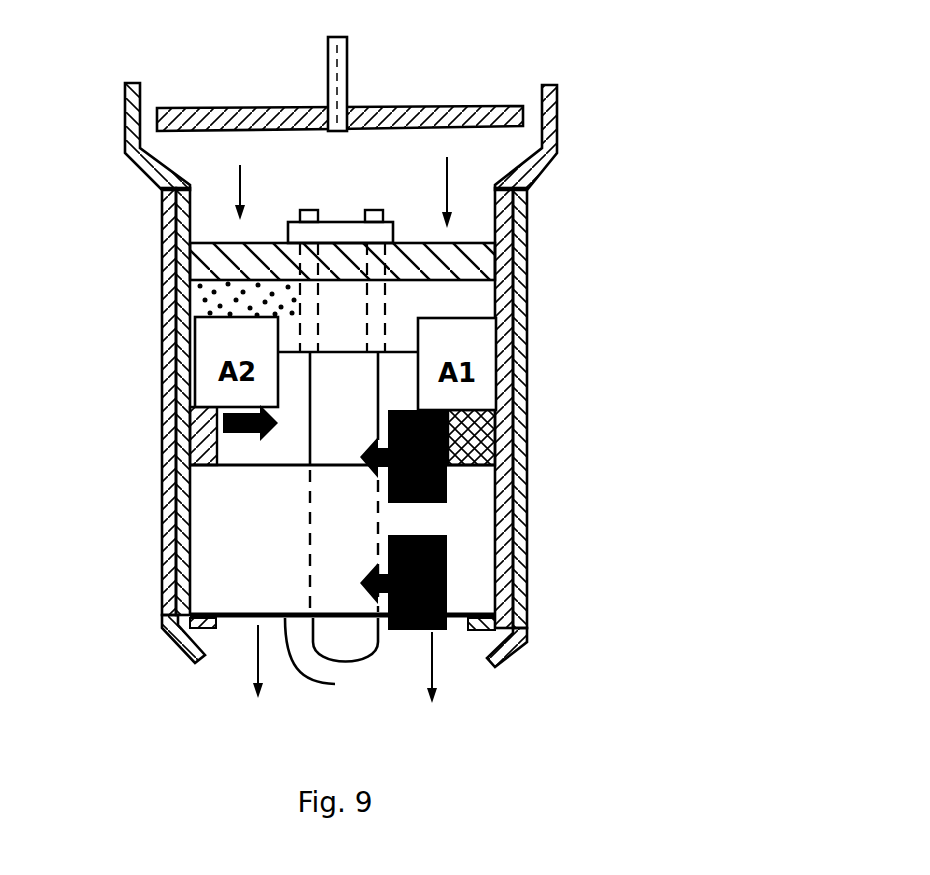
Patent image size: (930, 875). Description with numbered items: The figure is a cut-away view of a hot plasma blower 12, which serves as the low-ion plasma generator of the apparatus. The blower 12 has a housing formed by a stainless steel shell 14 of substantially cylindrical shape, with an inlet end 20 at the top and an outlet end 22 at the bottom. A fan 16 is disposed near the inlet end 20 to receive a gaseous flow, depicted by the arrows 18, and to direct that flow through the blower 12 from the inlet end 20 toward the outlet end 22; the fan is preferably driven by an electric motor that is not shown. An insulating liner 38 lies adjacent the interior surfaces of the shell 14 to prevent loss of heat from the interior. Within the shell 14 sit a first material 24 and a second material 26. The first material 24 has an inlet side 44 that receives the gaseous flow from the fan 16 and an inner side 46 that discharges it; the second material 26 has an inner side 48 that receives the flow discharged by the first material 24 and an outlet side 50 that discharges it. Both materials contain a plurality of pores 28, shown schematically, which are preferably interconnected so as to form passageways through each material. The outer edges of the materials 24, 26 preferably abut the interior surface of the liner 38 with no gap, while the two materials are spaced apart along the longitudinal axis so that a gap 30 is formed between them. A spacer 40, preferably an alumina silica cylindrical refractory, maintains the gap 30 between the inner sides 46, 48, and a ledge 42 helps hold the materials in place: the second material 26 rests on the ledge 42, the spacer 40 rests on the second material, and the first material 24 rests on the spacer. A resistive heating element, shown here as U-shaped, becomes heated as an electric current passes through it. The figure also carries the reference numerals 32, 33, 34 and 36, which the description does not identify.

The hot plasma blower 12 is at (120, 618).
The stainless steel shell 14 is at (137, 84).
The fan 16 is at (487, 110).
The arrows depicting gaseous flow 18 is at (238, 195).
The inlet end 20 is at (582, 123).
The outlet end 22 is at (532, 655).
The first material 24 is at (480, 305).
The second material 26 is at (470, 556).
The pores 28 is at (162, 213).
The gap 30 is at (515, 388).
The central compartment 32 is at (322, 403).
The insulating plate 33 is at (192, 264).
The connector block 34 is at (309, 210).
The terminal 36 is at (393, 222).
The insulating liner 38 is at (190, 312).
The spacer 40 is at (190, 387).
The ledge 42 is at (214, 630).
The inlet side 44 is at (222, 290).
The inner side of first material 46 is at (527, 352).
The inner side of second material 48 is at (452, 450).
The outlet side 50 is at (335, 684).